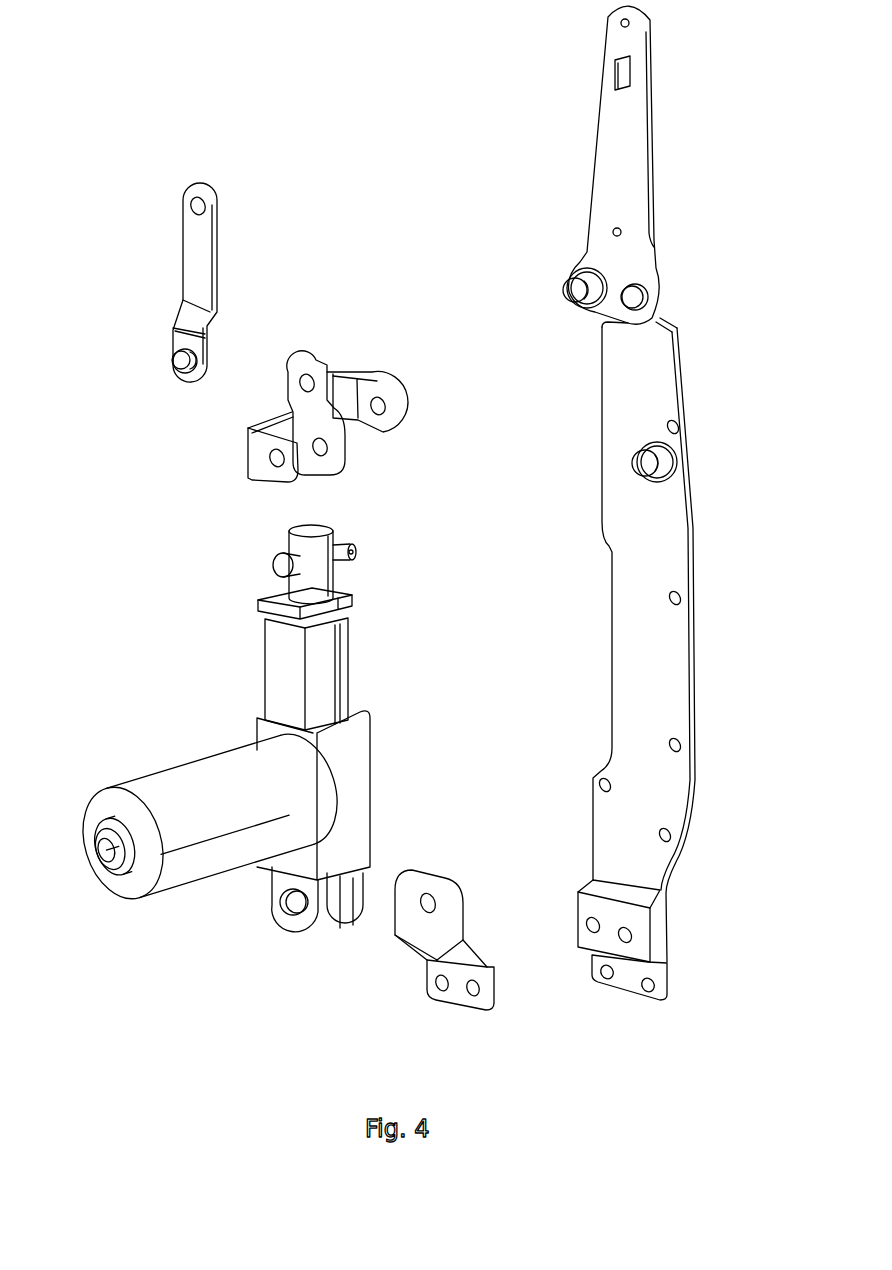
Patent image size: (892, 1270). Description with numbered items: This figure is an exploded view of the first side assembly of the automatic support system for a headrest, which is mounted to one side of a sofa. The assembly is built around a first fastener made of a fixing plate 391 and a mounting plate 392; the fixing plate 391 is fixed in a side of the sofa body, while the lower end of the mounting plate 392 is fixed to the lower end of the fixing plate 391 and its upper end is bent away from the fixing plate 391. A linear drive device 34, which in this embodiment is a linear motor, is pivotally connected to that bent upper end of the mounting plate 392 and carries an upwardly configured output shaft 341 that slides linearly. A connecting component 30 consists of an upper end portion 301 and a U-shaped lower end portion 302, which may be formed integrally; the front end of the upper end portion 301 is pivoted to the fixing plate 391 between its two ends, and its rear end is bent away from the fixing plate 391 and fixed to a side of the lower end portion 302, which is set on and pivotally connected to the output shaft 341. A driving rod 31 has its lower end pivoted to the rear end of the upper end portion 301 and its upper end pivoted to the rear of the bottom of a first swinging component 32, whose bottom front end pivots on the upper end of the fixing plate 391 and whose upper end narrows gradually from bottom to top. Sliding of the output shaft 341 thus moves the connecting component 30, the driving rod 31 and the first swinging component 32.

The connecting component 30 is at (308, 409).
The upper end portion 301 is at (347, 378).
The lower end portion 302 is at (257, 449).
The driving rod 31 is at (191, 251).
The first swinging component 32 is at (605, 147).
The linear drive device 34 is at (262, 728).
The output shaft 341 is at (338, 575).
The fixing plate 391 is at (672, 665).
The mounting plate 392 is at (430, 986).